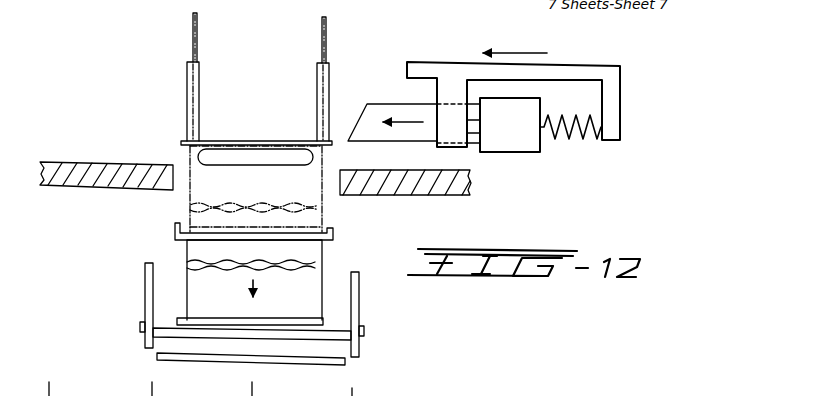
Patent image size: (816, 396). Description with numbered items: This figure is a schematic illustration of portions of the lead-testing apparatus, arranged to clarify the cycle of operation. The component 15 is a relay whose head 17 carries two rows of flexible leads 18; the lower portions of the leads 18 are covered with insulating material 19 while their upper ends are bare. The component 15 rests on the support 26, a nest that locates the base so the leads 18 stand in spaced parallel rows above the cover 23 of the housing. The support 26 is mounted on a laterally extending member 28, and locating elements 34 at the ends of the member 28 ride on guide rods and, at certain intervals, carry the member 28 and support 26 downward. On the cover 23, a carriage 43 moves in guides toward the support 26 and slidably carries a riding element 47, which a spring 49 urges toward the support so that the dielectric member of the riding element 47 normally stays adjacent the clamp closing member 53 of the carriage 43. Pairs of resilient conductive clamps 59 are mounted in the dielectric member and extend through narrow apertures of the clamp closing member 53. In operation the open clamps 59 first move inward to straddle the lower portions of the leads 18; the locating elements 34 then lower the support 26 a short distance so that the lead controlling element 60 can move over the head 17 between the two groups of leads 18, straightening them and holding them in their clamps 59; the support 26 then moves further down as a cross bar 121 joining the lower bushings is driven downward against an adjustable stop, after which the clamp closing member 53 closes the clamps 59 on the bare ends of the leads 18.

The component 15 is at (171, 138).
The head 17 is at (298, 144).
The leads 18 is at (322, 33).
The insulating material 19 is at (318, 95).
The cover 23 is at (121, 181).
The support 26 is at (334, 237).
The member 28 is at (365, 335).
The locating elements 34 is at (145, 287).
The carriage 43 is at (590, 76).
The riding element 47 is at (518, 146).
The spring 49 is at (578, 132).
The clamp closing member 53 is at (439, 138).
The resilient clamps 59 is at (380, 108).
The lead controlling element 60 is at (240, 156).
The cross bar 121 is at (340, 365).